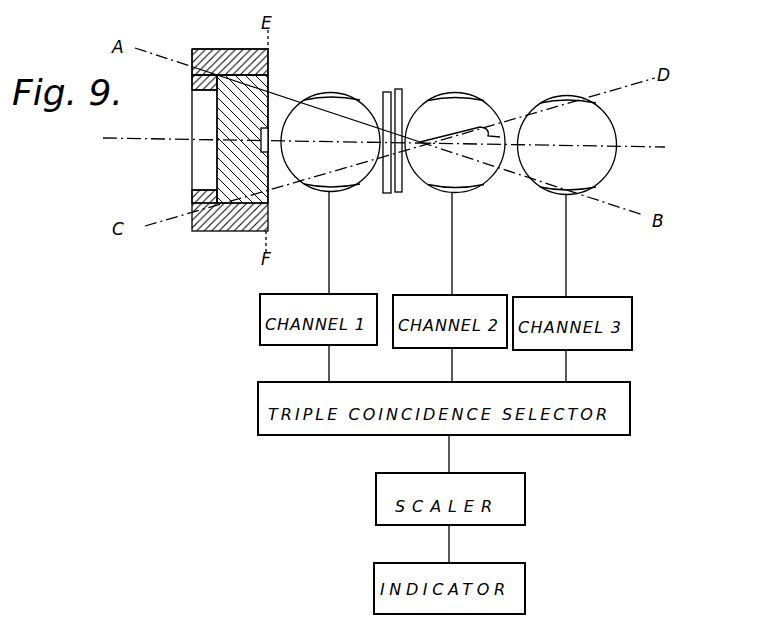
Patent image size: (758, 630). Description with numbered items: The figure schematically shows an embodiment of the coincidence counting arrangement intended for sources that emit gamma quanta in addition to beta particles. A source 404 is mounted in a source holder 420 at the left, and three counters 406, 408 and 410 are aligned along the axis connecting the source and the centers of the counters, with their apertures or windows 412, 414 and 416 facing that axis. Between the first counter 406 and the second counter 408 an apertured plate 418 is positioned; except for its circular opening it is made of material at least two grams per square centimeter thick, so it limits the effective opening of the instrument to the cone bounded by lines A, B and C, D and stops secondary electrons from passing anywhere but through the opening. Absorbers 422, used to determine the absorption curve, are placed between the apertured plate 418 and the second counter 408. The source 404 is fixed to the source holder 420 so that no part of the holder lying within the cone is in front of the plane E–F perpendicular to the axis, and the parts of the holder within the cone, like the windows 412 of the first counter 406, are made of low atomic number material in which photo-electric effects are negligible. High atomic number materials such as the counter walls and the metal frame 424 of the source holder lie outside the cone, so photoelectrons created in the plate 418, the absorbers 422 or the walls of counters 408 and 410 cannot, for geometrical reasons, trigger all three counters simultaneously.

The source 404 is at (270, 128).
The first counter 406 is at (343, 92).
The second counter 408 is at (474, 96).
The third counter 410 is at (590, 99).
The windows of the first counter 412 is at (376, 133).
The aperture 414 is at (478, 123).
The aperture 416 is at (612, 137).
The apertured plate 418 is at (388, 91).
The source holder 420 is at (232, 86).
The absorbers 422 is at (404, 96).
The metal frame of the source holder 424 is at (211, 230).